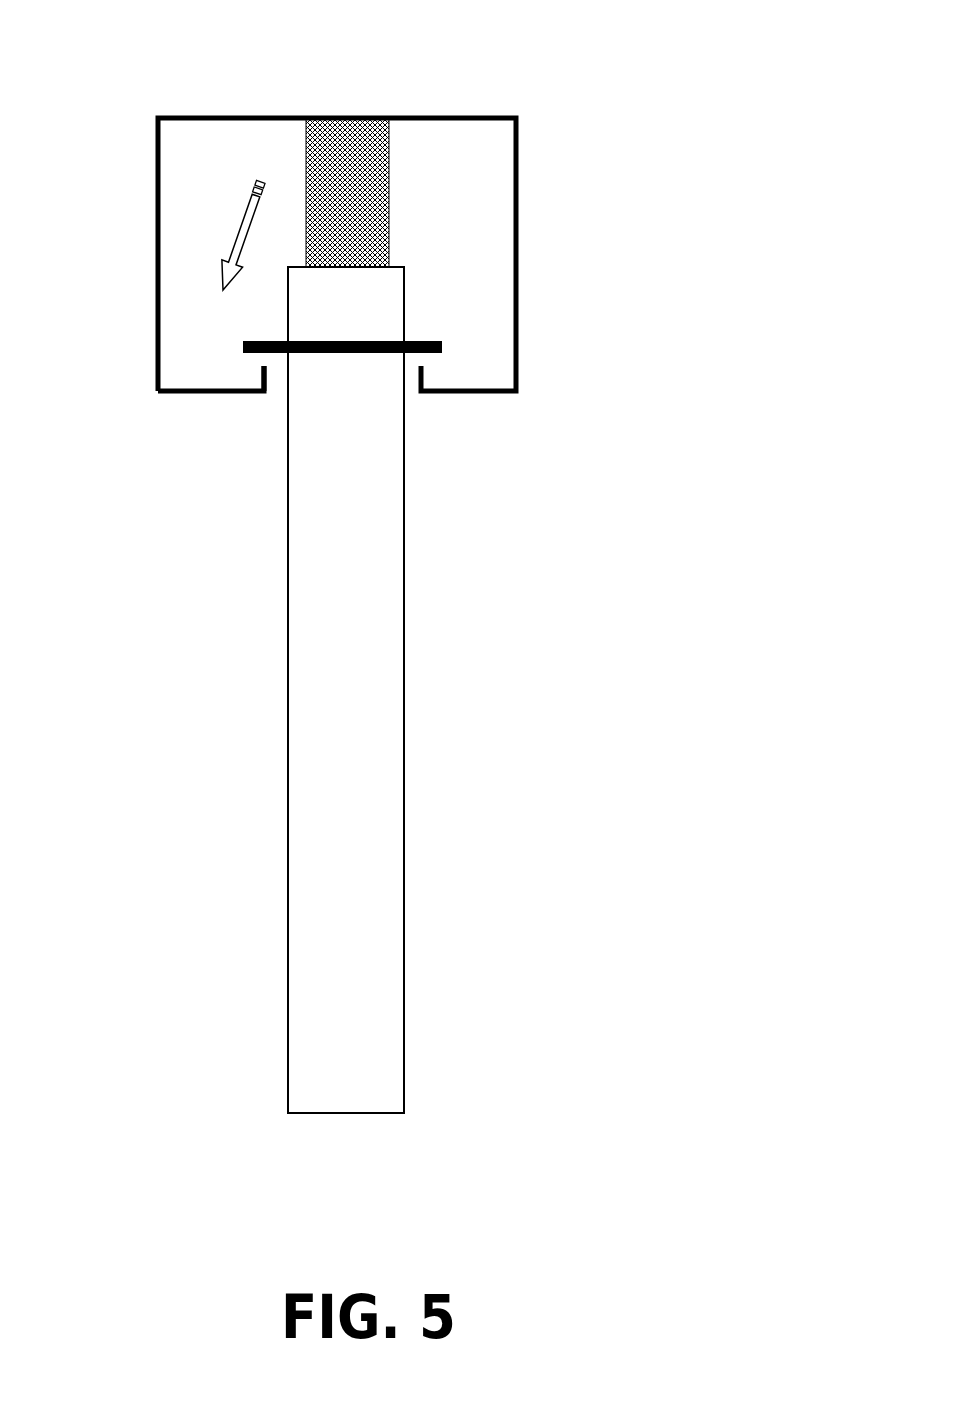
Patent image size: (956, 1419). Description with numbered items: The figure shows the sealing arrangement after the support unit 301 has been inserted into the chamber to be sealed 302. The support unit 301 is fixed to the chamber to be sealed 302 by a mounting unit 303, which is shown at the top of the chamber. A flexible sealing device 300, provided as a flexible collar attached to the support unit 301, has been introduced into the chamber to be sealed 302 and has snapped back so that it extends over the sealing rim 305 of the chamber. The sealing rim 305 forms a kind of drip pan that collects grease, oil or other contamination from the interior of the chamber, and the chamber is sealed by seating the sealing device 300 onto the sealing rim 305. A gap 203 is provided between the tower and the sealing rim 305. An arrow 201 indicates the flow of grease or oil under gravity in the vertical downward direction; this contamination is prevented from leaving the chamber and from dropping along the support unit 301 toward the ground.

The arrow 201 is at (252, 197).
The gap 203 is at (269, 418).
The sealing device 300 is at (442, 347).
The support unit 301 is at (404, 691).
The chamber to be sealed 302 is at (518, 118).
The mounting unit 303 is at (358, 160).
The sealing rim 305 is at (262, 372).